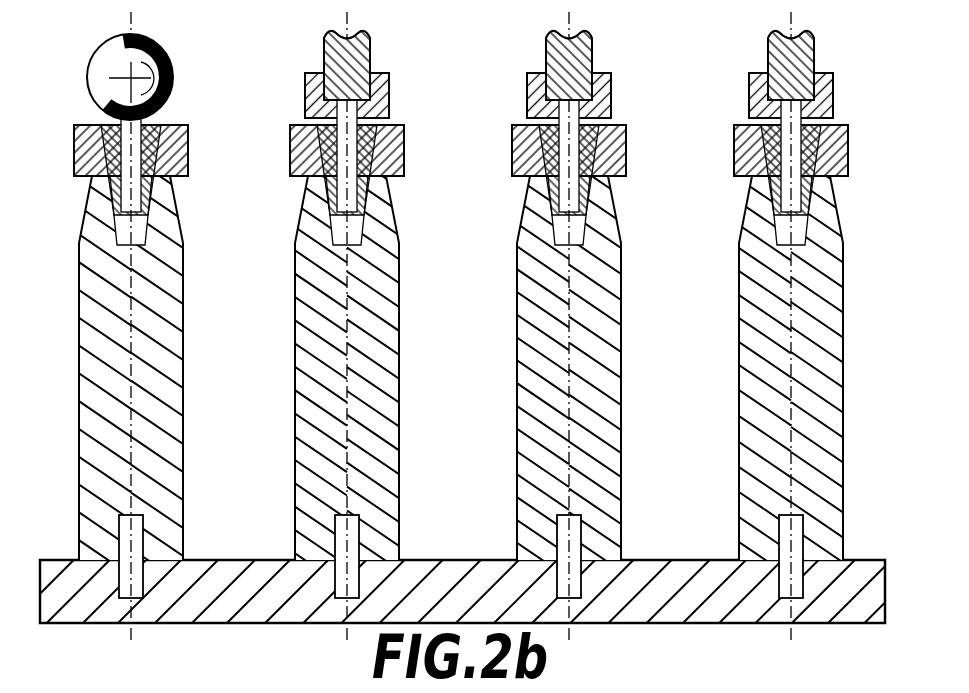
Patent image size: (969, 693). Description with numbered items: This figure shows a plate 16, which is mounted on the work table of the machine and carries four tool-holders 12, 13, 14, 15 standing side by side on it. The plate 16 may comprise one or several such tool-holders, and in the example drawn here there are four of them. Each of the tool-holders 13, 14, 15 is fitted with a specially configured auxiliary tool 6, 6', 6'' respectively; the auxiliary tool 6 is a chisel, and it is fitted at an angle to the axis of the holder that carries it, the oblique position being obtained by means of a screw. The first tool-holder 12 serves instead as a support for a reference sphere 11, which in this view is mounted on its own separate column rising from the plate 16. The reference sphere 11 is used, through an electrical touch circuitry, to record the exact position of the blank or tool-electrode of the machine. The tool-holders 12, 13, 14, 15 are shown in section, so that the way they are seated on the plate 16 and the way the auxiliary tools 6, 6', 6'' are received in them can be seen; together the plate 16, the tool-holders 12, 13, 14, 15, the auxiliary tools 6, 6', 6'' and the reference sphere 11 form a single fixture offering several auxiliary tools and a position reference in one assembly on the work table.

The auxiliary tool 6 is at (376, 59).
The auxiliary tool 6' is at (602, 58).
The auxiliary tool 6'' is at (820, 57).
The reference sphere 11 is at (102, 68).
The tool-holder 12 is at (158, 318).
The tool-holder 13 is at (373, 328).
The tool-holder 14 is at (593, 313).
The tool-holder 15 is at (823, 333).
The plate 16 is at (262, 590).